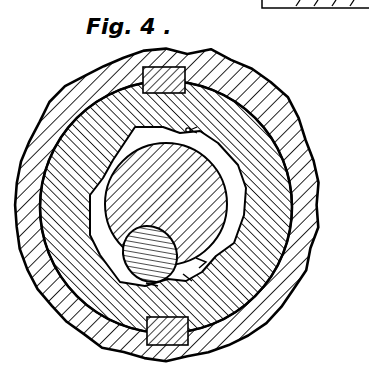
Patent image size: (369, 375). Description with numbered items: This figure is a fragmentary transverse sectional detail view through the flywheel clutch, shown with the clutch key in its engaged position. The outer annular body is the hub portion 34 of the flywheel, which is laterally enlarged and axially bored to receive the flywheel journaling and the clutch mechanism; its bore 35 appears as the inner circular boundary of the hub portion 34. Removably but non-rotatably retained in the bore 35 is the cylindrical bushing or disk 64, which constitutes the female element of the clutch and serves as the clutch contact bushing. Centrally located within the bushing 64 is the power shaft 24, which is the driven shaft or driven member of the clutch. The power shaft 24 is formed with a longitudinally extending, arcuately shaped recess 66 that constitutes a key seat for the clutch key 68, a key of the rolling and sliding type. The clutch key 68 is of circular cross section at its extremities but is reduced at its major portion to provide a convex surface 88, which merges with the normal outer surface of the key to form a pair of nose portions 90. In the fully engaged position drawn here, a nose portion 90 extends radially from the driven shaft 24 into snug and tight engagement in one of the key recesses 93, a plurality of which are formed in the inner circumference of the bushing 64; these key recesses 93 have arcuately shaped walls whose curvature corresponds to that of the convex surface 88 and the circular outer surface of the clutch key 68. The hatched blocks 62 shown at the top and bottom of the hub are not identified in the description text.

The power shaft 24 is at (126, 168).
The hub portion 34 is at (291, 127).
The bore 35 is at (284, 170).
The mounting block 62 is at (181, 63).
The clutch contact bushing 64 is at (239, 129).
The recess 66 is at (201, 263).
The clutch key 68 is at (124, 259).
The convex surface 88 is at (191, 281).
The nose portions 90 is at (150, 285).
The key recesses 93 is at (183, 136).